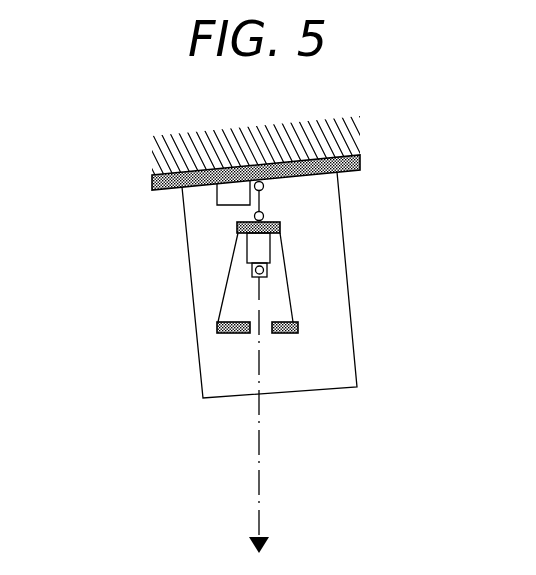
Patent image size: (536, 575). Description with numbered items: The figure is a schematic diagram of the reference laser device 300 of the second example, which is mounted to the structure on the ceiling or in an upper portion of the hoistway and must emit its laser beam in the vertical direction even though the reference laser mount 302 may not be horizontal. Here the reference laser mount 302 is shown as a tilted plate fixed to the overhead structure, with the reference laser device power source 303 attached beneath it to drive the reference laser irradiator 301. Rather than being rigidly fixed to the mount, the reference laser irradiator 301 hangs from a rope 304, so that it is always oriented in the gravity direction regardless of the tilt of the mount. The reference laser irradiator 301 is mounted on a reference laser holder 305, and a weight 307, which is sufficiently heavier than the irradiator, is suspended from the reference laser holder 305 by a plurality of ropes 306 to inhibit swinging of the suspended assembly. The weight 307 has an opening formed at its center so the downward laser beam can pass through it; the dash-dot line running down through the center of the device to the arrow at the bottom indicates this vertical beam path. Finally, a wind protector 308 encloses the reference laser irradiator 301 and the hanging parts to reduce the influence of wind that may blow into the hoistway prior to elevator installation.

The reference laser device 300 is at (257, 329).
The reference laser irradiator 301 is at (266, 248).
The reference laser mount 302 is at (152, 183).
The reference laser device power source 303 is at (217, 197).
The rope 304 is at (264, 201).
The reference laser holder 305 is at (237, 228).
The ropes 306 is at (225, 292).
The weight 307 is at (298, 330).
The wind protector 308 is at (201, 367).